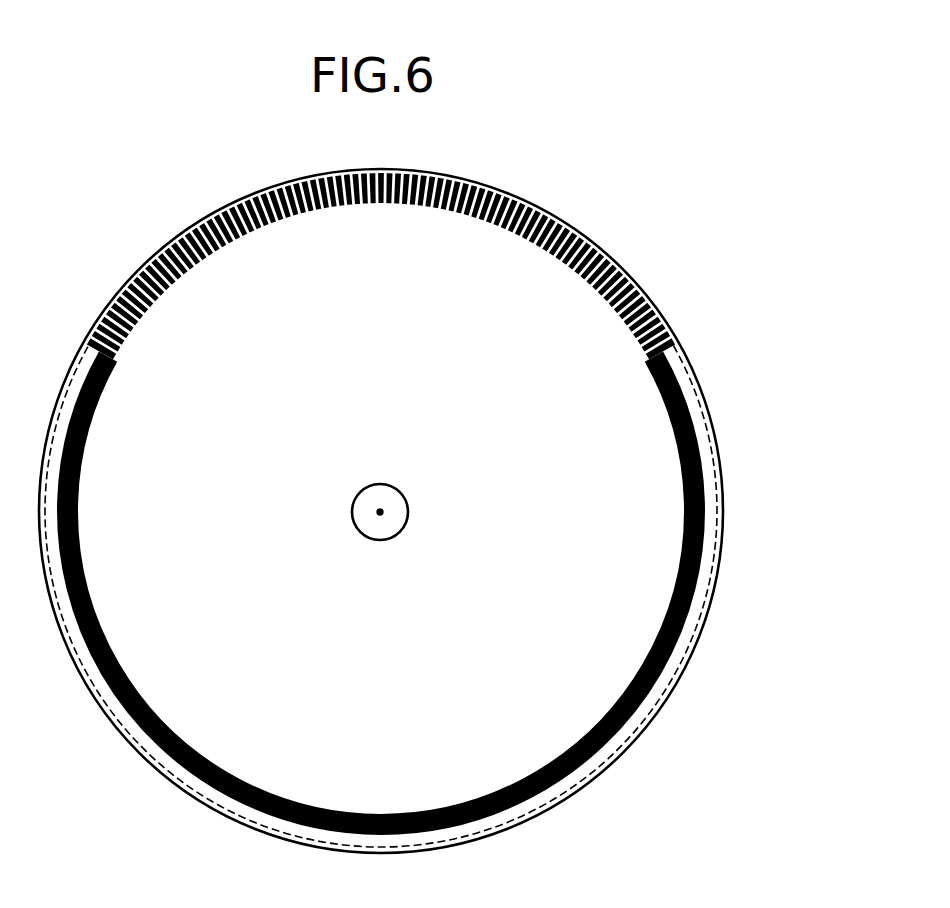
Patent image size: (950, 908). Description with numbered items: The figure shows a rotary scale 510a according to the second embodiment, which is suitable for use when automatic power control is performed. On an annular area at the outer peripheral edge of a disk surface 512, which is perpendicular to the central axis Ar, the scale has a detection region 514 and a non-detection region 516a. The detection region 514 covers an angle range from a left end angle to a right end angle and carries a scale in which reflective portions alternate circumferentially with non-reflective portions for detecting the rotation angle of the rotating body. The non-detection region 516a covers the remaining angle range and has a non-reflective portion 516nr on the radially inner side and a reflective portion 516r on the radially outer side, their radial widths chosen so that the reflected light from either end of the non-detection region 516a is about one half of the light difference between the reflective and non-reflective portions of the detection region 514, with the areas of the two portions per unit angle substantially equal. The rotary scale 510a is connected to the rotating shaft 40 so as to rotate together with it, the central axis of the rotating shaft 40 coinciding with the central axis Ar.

The disk 510a is at (757, 150).
The disk body surface 512 is at (661, 473).
The scale pattern stripes 514 is at (468, 180).
The reflective region 516r is at (680, 652).
The non-reflective region 516nr is at (662, 680).
The detection region 516a is at (433, 597).
The rotation shaft 40 is at (410, 509).
The rotation axis Ar is at (382, 508).